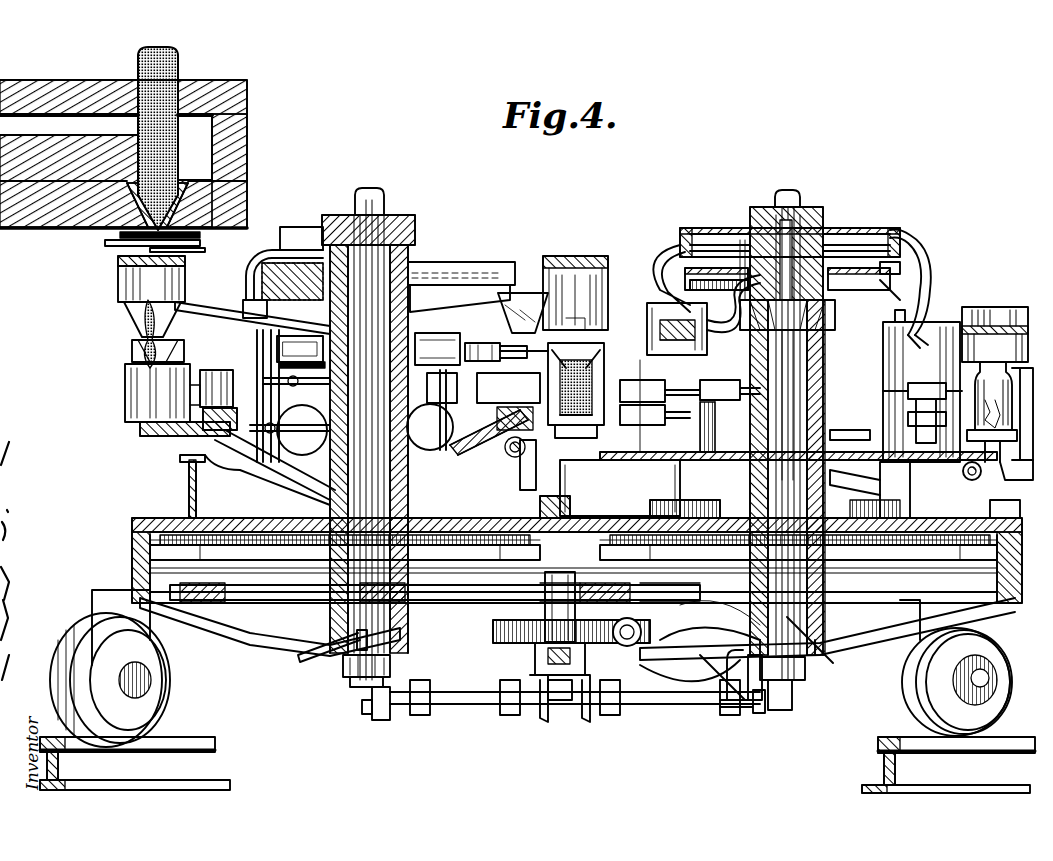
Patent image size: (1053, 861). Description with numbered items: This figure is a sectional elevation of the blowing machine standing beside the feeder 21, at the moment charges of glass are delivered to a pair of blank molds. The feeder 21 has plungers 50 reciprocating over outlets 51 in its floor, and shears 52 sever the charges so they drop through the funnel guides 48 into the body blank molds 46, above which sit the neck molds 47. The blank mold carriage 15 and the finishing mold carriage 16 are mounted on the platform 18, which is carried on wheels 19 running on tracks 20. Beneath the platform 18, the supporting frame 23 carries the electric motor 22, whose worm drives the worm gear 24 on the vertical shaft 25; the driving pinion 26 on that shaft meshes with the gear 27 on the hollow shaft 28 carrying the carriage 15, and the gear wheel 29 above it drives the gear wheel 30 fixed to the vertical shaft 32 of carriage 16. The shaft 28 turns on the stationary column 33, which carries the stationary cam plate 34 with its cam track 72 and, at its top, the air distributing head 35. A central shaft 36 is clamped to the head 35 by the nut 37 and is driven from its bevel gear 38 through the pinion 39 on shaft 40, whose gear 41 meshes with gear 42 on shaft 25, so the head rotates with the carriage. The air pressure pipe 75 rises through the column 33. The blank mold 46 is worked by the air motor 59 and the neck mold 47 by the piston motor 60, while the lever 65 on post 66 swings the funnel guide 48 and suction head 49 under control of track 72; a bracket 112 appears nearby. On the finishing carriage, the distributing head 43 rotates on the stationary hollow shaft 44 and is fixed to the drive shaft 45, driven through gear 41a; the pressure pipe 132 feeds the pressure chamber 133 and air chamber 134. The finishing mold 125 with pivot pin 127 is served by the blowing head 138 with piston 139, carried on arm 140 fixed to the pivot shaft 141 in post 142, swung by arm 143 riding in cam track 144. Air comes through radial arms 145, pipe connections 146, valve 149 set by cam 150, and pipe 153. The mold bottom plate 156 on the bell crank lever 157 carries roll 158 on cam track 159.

The blank mold carriage 15 is at (298, 488).
The finishing mold carriage 16 is at (712, 460).
The wheel base or platform 18 is at (600, 518).
The wheels 19 is at (72, 625).
The tracks 20 is at (182, 737).
The feeder 21 is at (235, 150).
The electric motor 22 is at (700, 632).
The supporting frame or structure 23 is at (705, 660).
The worm gear 24 is at (493, 632).
The vertical shaft 25 is at (576, 580).
The driving pinion 26 is at (512, 578).
The gear 27 is at (262, 600).
The hollow vertical shaft 28 is at (440, 516).
The gear wheel 29 is at (530, 552).
The gear wheel 30 is at (668, 552).
The vertical shaft 32 is at (818, 430).
The stationary hollow column or shaft 33 is at (473, 433).
The stationary cam plate 34 is at (465, 268).
The air distributing head 35 is at (388, 215).
The shaft 36 is at (408, 310).
The clamping nut 37 is at (370, 188).
The bevel gear 38 is at (350, 684).
The pinion 39 is at (375, 718).
The shaft 40 is at (475, 705).
The gear 41 is at (538, 720).
The gear 41a is at (585, 718).
The gear 42 is at (560, 702).
The air distributing head 43 is at (802, 215).
The stationary hollow shaft 44 is at (820, 345).
The drive shaft 45 is at (805, 598).
The partible body blank mold 46 is at (125, 378).
The partible neck mold 47 is at (132, 348).
The funnel guide 48 is at (130, 305).
The suction head 49 is at (118, 290).
The plungers 50 is at (170, 75).
The outlets 51 is at (115, 242).
The shears 52 is at (190, 250).
The air motor 59 is at (290, 396).
The air operated piston motor 60 is at (300, 336).
The lever 65 is at (230, 312).
The post 66 is at (250, 452).
The cam track 72 is at (500, 292).
The air pressure pipe 75 is at (300, 660).
The bracket 112 is at (300, 227).
The finishing mold 125 is at (927, 395).
The pivot pin 127 is at (645, 430).
The pressure pipe 132 is at (800, 395).
The pressure chamber 133 is at (835, 296).
The air chamber 134 is at (748, 228).
The blowing head 138 is at (660, 305).
The piston 139 is at (1008, 307).
The arm 140 is at (945, 383).
The vertical pivot shaft 141 is at (900, 312).
The post 142 is at (832, 440).
The arm 143 is at (905, 490).
The stationary cam track 144 is at (662, 500).
The radial arms 145 is at (862, 235).
The pipe connections 146 is at (928, 255).
The valve 149 is at (930, 225).
The stationary cam 150 is at (897, 267).
The pipe 153 is at (935, 285).
The mold bottom plate 156 is at (982, 480).
The bell crank lever 157 is at (975, 495).
The roll 158 is at (1005, 509).
The cam track 159 is at (568, 512).